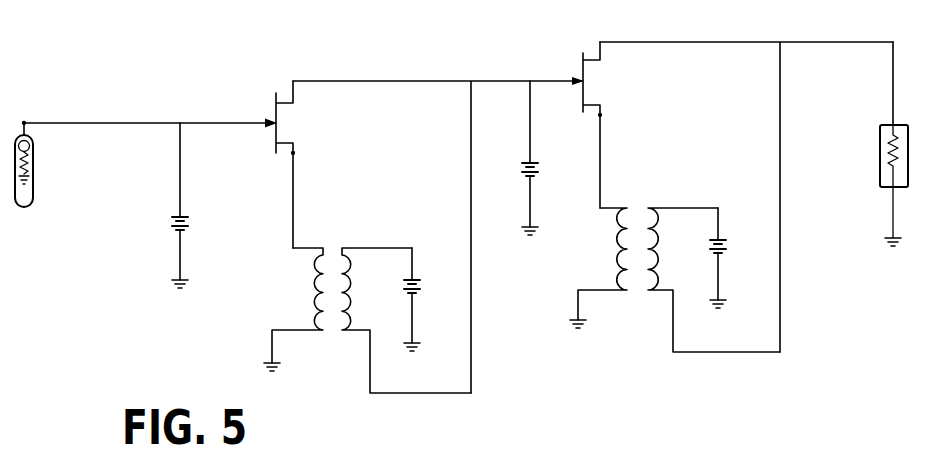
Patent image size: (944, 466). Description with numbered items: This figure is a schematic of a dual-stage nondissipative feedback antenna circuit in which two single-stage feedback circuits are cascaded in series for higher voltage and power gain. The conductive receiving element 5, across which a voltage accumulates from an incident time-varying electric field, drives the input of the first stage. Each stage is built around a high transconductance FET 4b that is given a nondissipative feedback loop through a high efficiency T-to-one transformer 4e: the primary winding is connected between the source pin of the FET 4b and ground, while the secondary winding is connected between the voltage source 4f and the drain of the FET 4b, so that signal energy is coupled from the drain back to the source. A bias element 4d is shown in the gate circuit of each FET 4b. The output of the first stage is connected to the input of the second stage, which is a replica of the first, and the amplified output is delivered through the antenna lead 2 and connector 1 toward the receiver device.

The connector 1 is at (872, 172).
The antenna lead 2 is at (812, 43).
The FET 4b is at (271, 149).
The gate bias battery 4d is at (190, 253).
The transformer 4e is at (310, 307).
The voltage source 4f is at (413, 320).
The receiving element 5 is at (34, 186).